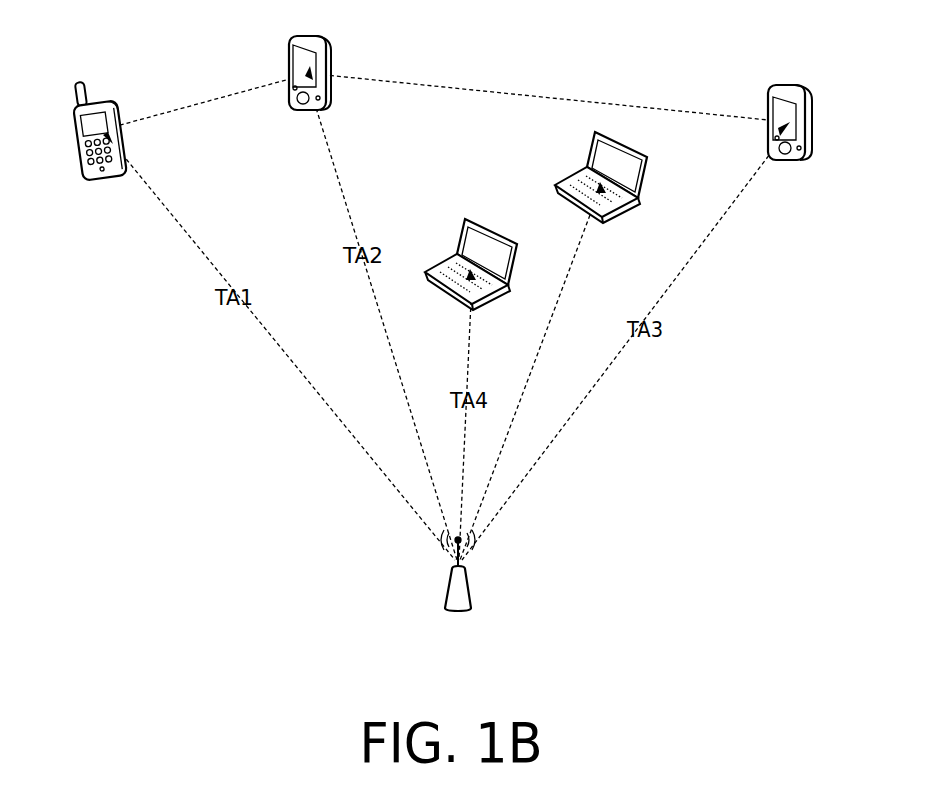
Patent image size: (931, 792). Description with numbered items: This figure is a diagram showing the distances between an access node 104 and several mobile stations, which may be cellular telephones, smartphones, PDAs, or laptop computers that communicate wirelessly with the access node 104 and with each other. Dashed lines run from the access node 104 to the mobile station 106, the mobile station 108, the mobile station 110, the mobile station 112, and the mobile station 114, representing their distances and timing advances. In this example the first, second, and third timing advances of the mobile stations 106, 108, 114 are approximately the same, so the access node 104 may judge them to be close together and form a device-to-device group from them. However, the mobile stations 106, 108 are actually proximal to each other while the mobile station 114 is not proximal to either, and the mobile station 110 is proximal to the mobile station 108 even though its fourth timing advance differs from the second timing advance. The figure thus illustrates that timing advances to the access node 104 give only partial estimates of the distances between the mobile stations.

The access node 104 is at (460, 600).
The mobile station 106 is at (101, 156).
The mobile station 108 is at (310, 101).
The mobile station 110 is at (475, 288).
The mobile station 112 is at (605, 202).
The mobile station 114 is at (792, 150).